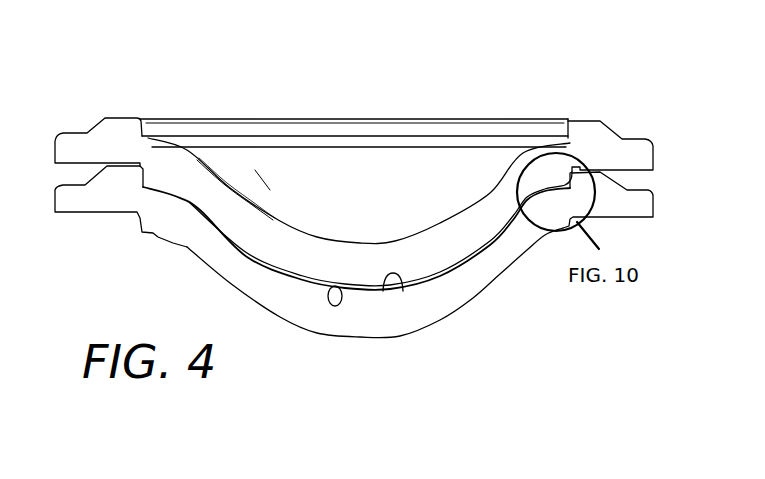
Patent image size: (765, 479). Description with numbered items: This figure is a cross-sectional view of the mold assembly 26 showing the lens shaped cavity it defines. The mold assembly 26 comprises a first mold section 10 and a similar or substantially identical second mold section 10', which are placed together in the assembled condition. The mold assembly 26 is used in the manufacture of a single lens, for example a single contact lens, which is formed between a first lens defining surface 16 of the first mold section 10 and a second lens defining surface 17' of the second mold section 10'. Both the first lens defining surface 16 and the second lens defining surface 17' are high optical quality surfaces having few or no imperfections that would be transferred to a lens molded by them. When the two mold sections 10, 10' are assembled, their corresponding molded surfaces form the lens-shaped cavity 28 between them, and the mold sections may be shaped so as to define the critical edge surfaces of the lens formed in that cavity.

The mold assembly 26 is at (418, 99).
The second mold section 10' is at (354, 104).
The first mold section 10 is at (354, 259).
The lens-shaped cavity 28 is at (455, 267).
The second lens defining surface 17' is at (314, 238).
The first lens defining surface 16 is at (399, 290).